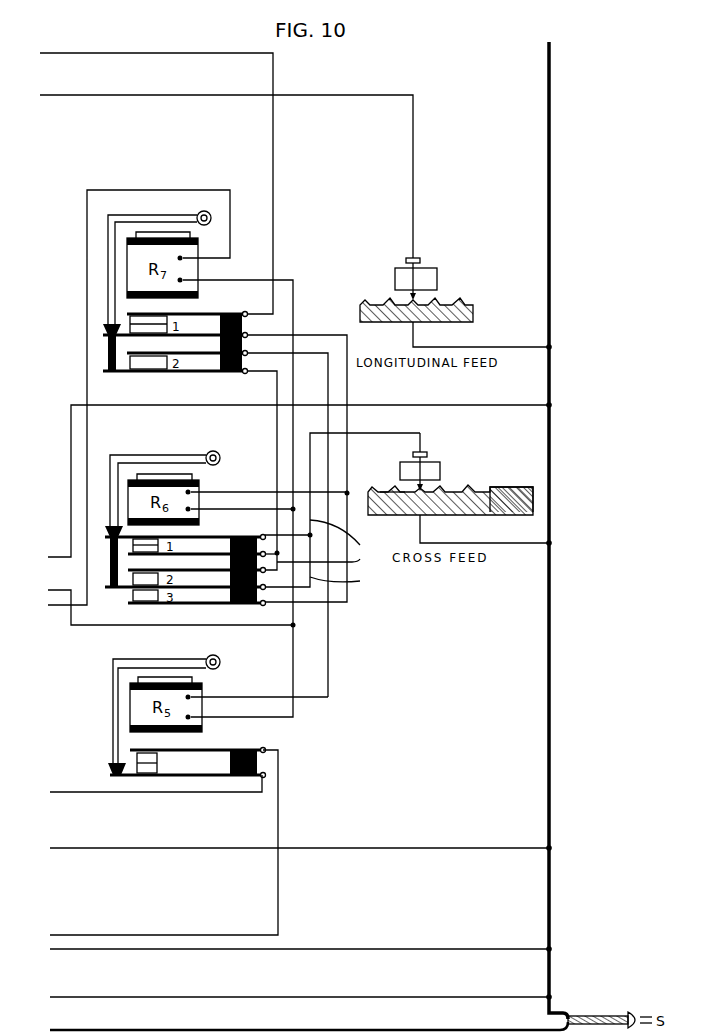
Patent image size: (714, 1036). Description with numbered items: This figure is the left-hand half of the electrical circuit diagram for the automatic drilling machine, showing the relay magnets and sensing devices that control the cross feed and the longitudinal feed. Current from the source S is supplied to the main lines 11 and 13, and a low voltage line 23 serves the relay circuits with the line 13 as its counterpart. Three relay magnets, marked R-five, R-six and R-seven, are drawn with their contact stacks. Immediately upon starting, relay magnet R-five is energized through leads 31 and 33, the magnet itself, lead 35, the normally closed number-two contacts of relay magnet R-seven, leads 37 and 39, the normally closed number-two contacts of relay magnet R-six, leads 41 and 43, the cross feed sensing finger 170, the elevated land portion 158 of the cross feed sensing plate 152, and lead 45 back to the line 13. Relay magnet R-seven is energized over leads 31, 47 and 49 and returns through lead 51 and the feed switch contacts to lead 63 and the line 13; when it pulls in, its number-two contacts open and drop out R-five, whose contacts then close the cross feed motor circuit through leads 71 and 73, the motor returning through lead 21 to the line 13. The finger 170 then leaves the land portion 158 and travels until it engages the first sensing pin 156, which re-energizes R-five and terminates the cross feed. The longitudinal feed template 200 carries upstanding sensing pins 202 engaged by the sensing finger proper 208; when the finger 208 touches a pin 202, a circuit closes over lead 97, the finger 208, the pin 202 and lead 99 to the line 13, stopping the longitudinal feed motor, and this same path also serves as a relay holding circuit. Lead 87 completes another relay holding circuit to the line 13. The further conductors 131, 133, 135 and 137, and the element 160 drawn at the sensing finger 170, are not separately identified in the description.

The main line 11 is at (342, 1030).
The main line 13 is at (551, 420).
The lead 21 is at (343, 949).
The low voltage line 23 is at (343, 997).
The lead 31 is at (60, 590).
The lead 33 is at (297, 681).
The lead 35 is at (236, 697).
The lead 37 is at (272, 443).
The lead 39 is at (328, 563).
The lead 41 is at (345, 584).
The lead 43 is at (345, 538).
The lead 45 is at (467, 543).
The lead 47 is at (294, 612).
The lead 49 is at (294, 431).
The lead 51 is at (231, 237).
The lead 63 is at (57, 557).
The lead 71 is at (145, 792).
The lead 73 is at (281, 815).
The lead 87 is at (349, 848).
The lead 97 is at (118, 95).
The lead 99 is at (475, 347).
The conductor 131 is at (212, 508).
The conductor 133 is at (242, 495).
The conductor 135 is at (349, 386).
The conductor 137 is at (120, 53).
The cross feed sensing plate 152 is at (408, 519).
The sensing pin 156 is at (402, 490).
The land portion 158 is at (512, 487).
The cross feed limit switch 160 is at (408, 466).
The sensing finger 170 is at (424, 488).
The longitudinal feed template 200 is at (360, 303).
The sensing pins 202 is at (433, 275).
The sensing finger 208 is at (420, 297).